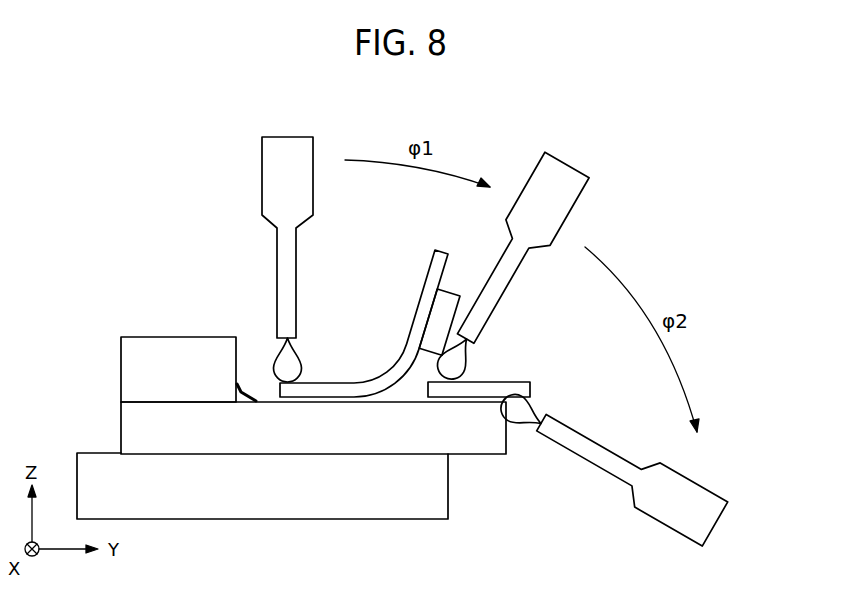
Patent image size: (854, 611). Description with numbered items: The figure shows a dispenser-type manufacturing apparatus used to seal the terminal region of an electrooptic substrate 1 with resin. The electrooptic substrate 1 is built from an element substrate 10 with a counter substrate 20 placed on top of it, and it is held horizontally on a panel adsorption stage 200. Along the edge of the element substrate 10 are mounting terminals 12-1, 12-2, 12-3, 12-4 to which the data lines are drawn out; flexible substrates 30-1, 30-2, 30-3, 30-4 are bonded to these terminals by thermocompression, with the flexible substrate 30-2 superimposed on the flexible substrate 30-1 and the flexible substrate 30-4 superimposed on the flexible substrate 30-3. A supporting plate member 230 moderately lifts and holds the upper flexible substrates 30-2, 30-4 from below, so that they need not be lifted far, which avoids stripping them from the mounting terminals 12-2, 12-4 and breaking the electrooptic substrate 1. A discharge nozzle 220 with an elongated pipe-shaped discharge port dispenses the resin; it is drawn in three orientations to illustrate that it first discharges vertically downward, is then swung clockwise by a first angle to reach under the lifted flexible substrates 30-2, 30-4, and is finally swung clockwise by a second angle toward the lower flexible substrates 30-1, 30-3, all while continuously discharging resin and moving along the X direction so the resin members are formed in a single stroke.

The electrooptic substrate 1 is at (118, 447).
The element substrate 10 is at (473, 454).
The counter substrate 20 is at (163, 337).
The panel adsorption stage 200 is at (448, 512).
The discharge nozzle 220 is at (290, 142).
The supporting plate member 230 is at (440, 289).
The flexible substrate 30-1 is at (511, 375).
The flexible substrate 30-3 is at (522, 373).
The flexible substrate 30-2 is at (364, 320).
The flexible substrate 30-4 is at (430, 267).
The mounting terminal 12-1 is at (548, 442).
The mounting terminal 12-3 is at (523, 426).
The mounting terminal 12-2 is at (236, 334).
The mounting terminal 12-4 is at (273, 396).